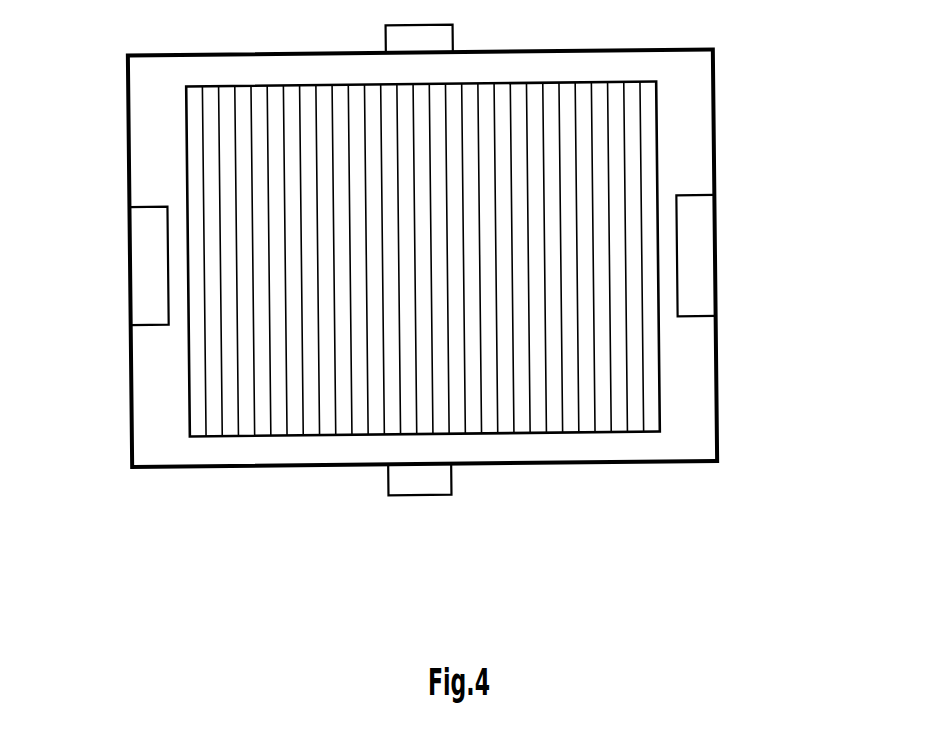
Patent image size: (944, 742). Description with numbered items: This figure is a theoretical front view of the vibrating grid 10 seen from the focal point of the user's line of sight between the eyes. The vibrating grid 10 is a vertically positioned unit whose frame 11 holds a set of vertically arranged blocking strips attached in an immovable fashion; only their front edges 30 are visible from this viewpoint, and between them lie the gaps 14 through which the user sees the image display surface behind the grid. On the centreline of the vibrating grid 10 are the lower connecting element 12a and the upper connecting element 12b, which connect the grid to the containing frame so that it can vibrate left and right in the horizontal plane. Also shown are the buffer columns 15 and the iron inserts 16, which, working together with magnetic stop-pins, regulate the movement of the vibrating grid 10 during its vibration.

The vibrating grid 10 is at (740, 42).
The frame 11 is at (730, 402).
The lower connecting element 12a is at (470, 31).
The upper connecting element 12b is at (428, 505).
The gaps 14 is at (614, 341).
The buffer columns 15 is at (155, 127).
The iron inserts 16 is at (144, 265).
The front edges 30 is at (360, 390).